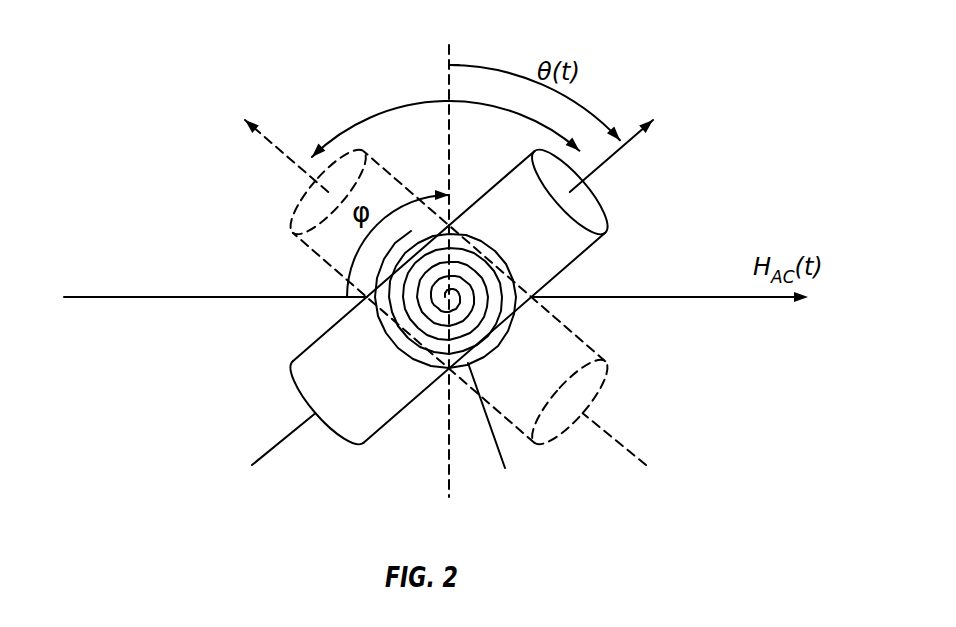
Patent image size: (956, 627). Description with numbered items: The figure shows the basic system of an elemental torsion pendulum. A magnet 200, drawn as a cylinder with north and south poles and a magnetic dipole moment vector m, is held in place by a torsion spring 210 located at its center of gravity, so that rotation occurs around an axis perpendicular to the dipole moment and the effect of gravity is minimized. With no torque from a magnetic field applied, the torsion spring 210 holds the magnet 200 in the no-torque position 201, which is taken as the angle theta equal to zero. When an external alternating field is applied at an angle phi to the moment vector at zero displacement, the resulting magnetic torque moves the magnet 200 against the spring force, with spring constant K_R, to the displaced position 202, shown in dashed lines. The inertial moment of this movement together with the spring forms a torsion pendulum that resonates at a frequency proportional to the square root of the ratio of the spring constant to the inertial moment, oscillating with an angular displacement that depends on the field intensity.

The magnet 200 is at (313, 358).
The no-torque position 201 is at (276, 446).
The displaced position 202 is at (615, 442).
The torsion spring 210 is at (533, 283).